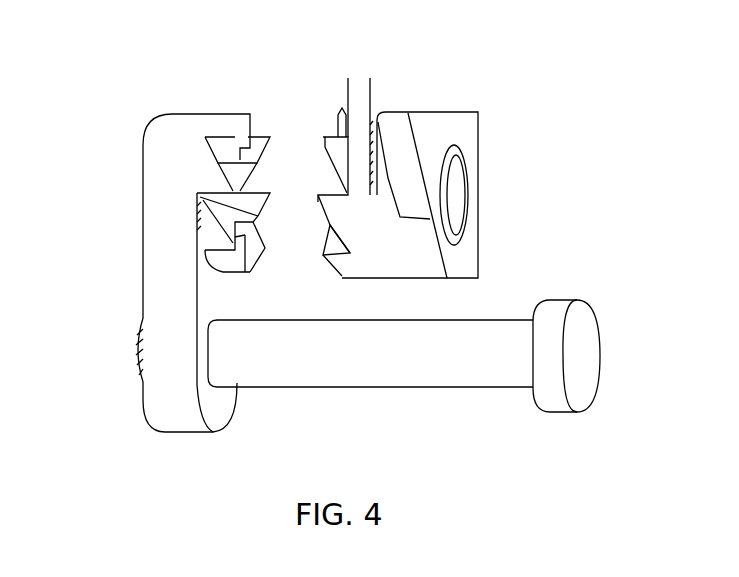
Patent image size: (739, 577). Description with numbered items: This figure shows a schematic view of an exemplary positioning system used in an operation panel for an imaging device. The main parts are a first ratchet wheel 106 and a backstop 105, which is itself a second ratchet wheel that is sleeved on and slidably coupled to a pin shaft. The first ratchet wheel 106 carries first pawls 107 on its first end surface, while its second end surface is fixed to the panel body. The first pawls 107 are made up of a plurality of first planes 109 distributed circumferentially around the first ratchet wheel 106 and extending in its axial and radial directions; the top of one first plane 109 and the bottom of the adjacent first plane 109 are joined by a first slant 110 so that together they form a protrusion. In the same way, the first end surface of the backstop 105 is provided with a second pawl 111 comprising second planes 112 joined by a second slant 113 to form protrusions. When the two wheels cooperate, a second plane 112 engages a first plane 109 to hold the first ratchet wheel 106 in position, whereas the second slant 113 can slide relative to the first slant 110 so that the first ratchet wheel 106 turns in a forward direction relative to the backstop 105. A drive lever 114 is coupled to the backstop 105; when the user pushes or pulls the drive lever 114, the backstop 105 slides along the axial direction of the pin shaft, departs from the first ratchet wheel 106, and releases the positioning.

The backstop 105 is at (168, 175).
The first ratchet wheel 106 is at (403, 238).
The first pawls 107 is at (334, 256).
The first planes 109 is at (337, 128).
The first slant 110 is at (325, 150).
The second pawl 111 is at (228, 136).
The second planes 112 is at (227, 268).
The second slant 113 is at (197, 222).
The drive lever 114 is at (477, 355).